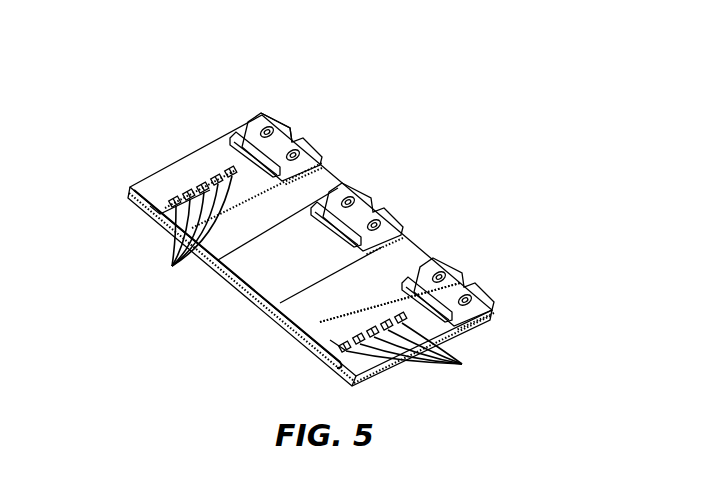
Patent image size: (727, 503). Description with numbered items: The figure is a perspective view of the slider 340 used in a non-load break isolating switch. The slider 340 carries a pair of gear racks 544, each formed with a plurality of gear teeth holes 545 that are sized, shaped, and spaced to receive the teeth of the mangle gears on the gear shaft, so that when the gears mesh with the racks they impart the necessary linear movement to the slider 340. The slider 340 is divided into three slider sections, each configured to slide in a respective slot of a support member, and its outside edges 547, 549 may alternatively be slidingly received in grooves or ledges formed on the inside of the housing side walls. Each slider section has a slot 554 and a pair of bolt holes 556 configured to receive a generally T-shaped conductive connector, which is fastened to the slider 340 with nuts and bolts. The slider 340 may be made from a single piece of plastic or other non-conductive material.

The slider 340 is at (449, 163).
The gear rack 544 is at (232, 163).
The gear teeth holes 545 is at (172, 266).
The outside edge 547 is at (238, 126).
The outside edge 549 is at (458, 328).
The slot 554 is at (292, 130).
The bolt holes 556 is at (382, 222).